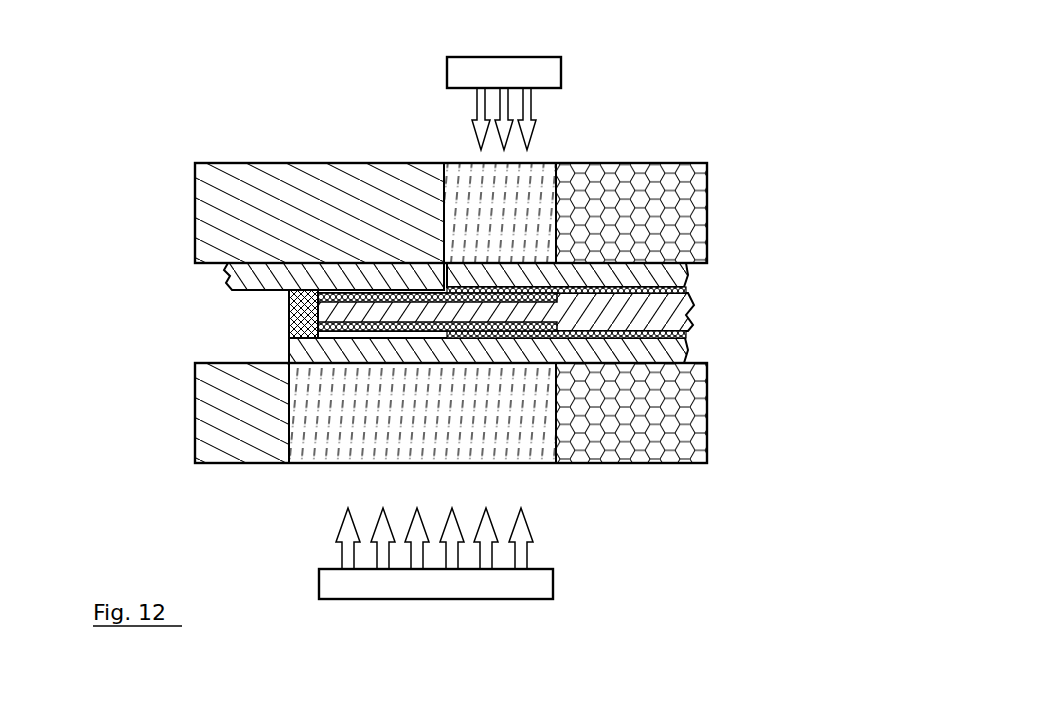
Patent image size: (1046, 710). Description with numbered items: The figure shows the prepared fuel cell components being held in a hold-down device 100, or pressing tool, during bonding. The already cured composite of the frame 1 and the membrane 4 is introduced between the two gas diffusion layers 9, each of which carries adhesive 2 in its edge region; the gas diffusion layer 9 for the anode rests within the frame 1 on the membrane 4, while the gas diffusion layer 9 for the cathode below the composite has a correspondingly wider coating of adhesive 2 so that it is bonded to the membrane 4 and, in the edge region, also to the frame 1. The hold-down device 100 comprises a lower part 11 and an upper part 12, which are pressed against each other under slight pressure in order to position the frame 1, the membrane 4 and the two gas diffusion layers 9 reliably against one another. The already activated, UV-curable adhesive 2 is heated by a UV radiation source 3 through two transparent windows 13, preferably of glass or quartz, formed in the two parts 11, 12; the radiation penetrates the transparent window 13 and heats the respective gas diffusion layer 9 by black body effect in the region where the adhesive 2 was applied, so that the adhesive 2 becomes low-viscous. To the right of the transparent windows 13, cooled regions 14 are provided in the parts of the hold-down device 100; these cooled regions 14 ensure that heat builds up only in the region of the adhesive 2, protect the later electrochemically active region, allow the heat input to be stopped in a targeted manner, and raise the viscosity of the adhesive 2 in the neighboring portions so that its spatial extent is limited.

The frame 1 is at (253, 272).
The adhesive 2 is at (390, 290).
The UV radiation source 3 is at (463, 70).
The membrane 4 is at (288, 323).
The gas diffusion layer 9 is at (688, 275).
The lower part 11 is at (225, 163).
The upper part 12 is at (195, 455).
The transparent window 13 is at (508, 178).
The cooled region 14 is at (675, 213).
The hold-down device 100 is at (392, 307).